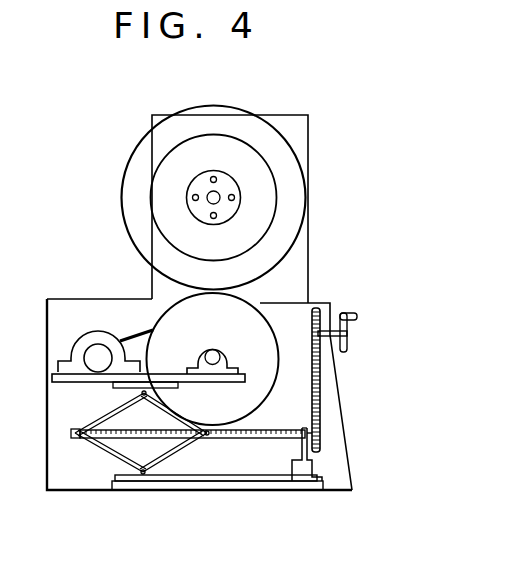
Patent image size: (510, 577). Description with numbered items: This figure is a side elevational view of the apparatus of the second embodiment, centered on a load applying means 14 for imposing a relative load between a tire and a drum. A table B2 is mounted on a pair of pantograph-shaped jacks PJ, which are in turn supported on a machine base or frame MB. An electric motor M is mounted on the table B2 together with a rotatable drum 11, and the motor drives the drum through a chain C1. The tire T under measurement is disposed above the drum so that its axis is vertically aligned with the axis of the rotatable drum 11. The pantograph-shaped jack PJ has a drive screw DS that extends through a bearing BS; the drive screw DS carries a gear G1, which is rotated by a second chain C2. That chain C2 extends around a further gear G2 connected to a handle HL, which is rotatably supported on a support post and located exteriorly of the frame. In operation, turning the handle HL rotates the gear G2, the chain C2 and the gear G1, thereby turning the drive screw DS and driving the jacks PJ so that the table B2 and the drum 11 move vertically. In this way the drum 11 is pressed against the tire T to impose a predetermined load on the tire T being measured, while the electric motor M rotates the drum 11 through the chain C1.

The tire T is at (238, 120).
The rotatable drum 11 is at (263, 350).
The electric motor M is at (83, 345).
The chain C1 is at (140, 338).
The table B2 is at (72, 380).
The pantograph-shaped jack PJ is at (108, 452).
The drive screw DS is at (250, 440).
The machine base MB is at (185, 490).
The chain C2 is at (315, 386).
The gear G2 is at (320, 318).
The handle HL is at (350, 333).
The gear G1 is at (318, 440).
The bearing BS is at (308, 455).
The load applying means 14 is at (355, 400).